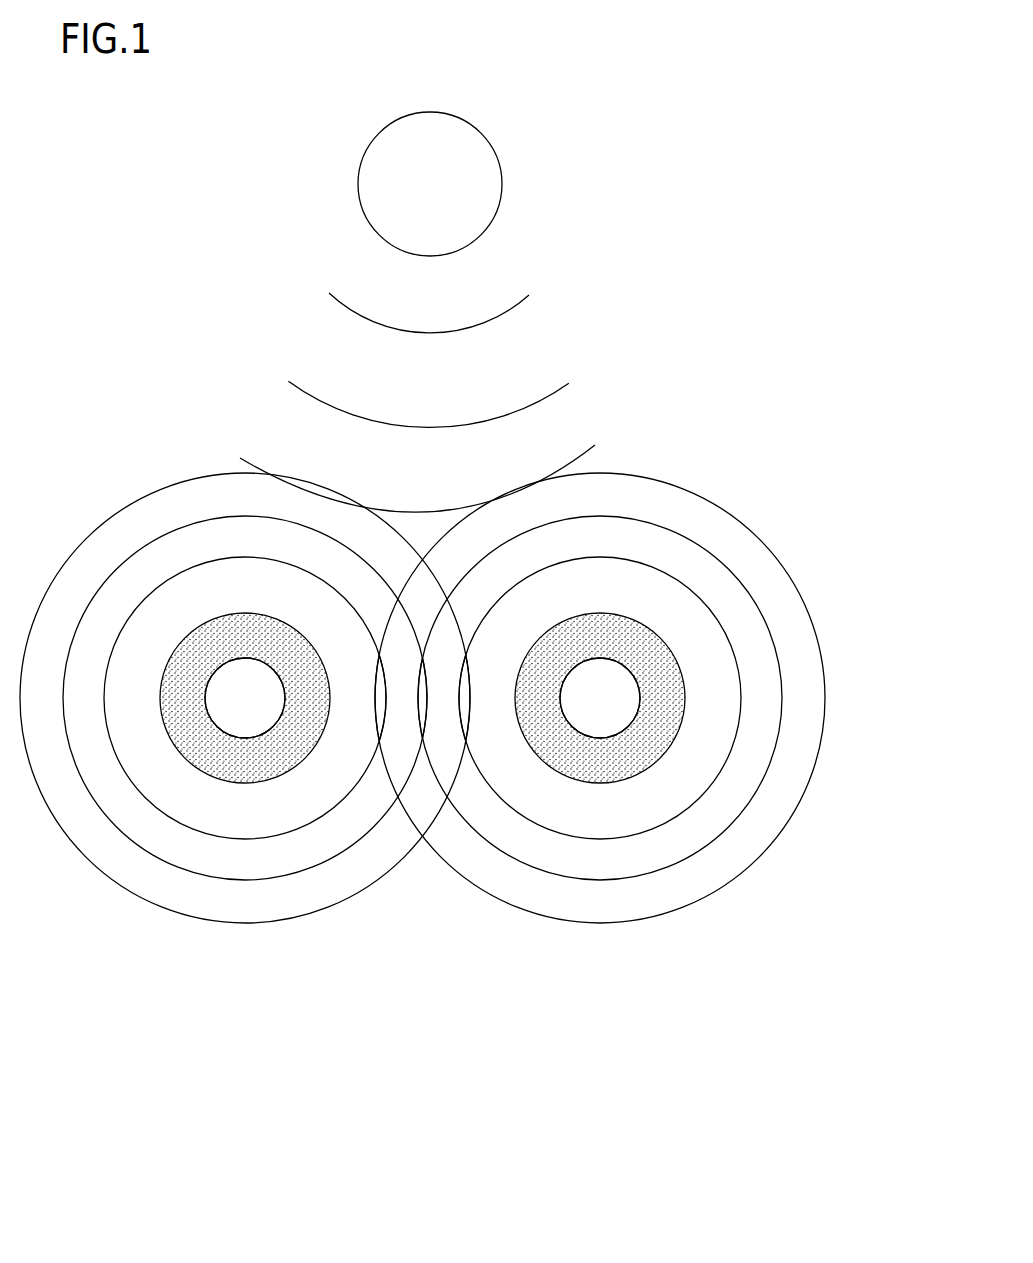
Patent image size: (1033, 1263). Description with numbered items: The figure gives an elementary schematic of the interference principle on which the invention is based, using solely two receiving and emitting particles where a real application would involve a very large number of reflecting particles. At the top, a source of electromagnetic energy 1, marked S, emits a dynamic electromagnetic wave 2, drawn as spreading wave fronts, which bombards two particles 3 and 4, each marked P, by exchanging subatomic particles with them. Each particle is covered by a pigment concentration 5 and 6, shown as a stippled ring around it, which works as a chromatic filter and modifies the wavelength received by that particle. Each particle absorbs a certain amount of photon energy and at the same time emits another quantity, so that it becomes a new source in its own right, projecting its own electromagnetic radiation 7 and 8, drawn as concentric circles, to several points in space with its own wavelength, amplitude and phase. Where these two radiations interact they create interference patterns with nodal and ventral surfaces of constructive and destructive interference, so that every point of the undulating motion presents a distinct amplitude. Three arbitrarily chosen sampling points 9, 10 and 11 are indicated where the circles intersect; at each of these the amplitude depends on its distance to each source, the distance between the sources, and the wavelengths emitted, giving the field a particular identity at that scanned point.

The source of electromagnetic energy 1 is at (503, 183).
The dynamic electromagnetic wave 2 is at (500, 313).
The particle 3 is at (218, 697).
The particle 4 is at (628, 697).
The pigment concentration 5 is at (245, 768).
The pigment concentration 6 is at (607, 768).
The electromagnetic radiation 7 is at (147, 875).
The electromagnetic radiation 8 is at (728, 858).
The sampling point 9 is at (381, 741).
The sampling point 10 is at (423, 738).
The sampling point 11 is at (465, 741).